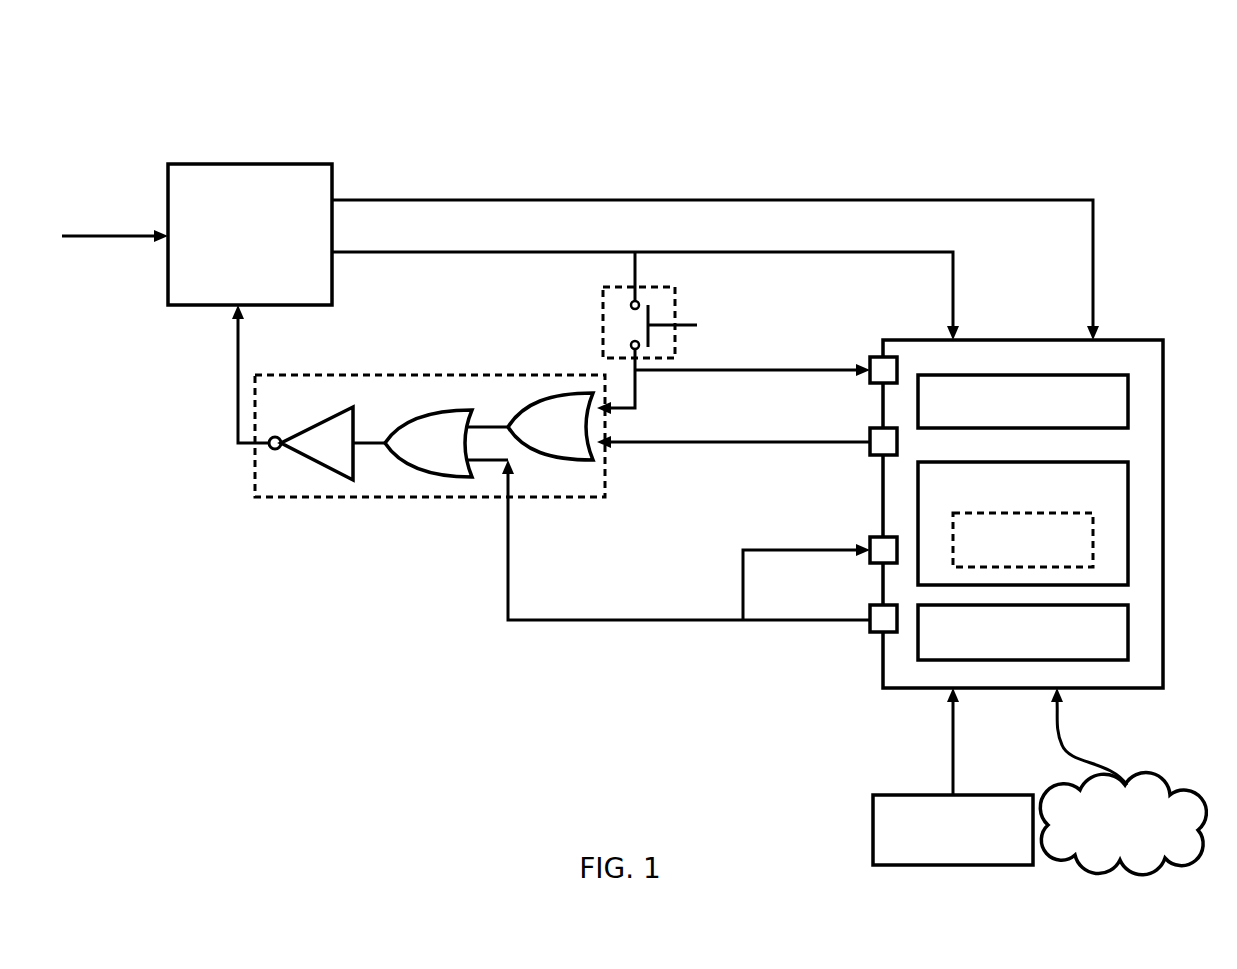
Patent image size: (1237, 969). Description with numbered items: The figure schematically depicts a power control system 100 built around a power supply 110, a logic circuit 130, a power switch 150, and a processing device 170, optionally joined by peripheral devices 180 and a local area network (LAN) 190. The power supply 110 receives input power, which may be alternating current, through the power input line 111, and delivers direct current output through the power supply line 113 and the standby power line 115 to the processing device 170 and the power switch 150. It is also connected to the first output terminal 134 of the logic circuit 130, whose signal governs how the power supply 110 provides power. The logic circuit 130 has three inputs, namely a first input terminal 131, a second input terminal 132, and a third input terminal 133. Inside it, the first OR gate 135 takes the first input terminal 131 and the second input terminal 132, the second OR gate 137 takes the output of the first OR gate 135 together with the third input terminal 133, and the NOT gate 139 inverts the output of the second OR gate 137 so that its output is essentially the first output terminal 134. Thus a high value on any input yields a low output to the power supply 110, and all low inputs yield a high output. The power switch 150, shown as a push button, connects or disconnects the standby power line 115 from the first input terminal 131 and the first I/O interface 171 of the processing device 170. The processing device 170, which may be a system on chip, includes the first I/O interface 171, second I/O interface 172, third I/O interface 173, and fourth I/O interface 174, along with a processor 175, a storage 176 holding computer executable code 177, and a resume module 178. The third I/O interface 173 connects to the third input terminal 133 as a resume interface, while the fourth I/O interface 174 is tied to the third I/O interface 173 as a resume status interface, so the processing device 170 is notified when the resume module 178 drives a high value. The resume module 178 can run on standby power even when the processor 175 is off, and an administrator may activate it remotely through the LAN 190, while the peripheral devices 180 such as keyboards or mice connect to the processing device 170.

The system 100 is at (162, 60).
The power supply 110 is at (268, 164).
The power input line 111 is at (92, 236).
The power supply line 113 is at (365, 200).
The standby power line 115 is at (365, 253).
The logic circuit 130 is at (340, 375).
The first input terminal 131 is at (617, 413).
The second input terminal 132 is at (623, 447).
The third input terminal 133 is at (478, 462).
The first output terminal 134 is at (255, 447).
The first OR gate 135 is at (560, 462).
The second OR gate 137 is at (418, 462).
The NOT gate 139 is at (312, 462).
The power switch 150 is at (603, 303).
The processing device 170 is at (1011, 478).
The first I/O interface 171 is at (870, 357).
The second I/O interface 172 is at (870, 428).
The third I/O interface 173 is at (870, 632).
The fourth I/O interface 174 is at (870, 537).
The processor 175 is at (1128, 397).
The storage 176 is at (1128, 478).
The code 177 is at (1093, 530).
The resume module 178 is at (1128, 630).
The peripheral devices 180 is at (903, 795).
The local area network (LAN) 190 is at (1150, 785).